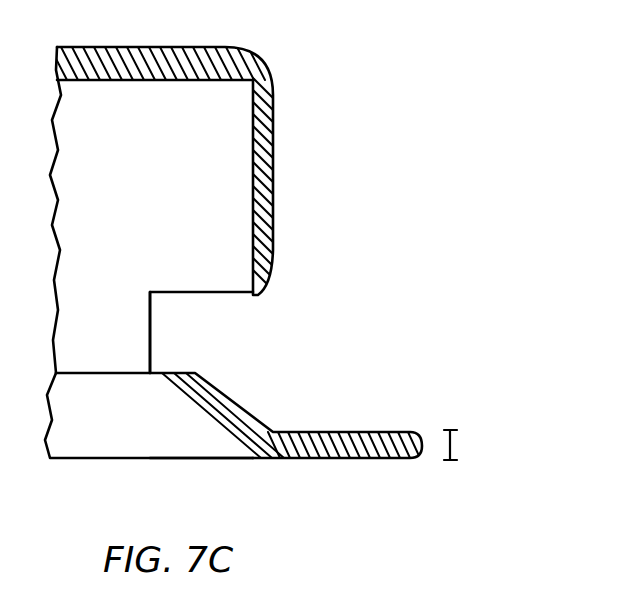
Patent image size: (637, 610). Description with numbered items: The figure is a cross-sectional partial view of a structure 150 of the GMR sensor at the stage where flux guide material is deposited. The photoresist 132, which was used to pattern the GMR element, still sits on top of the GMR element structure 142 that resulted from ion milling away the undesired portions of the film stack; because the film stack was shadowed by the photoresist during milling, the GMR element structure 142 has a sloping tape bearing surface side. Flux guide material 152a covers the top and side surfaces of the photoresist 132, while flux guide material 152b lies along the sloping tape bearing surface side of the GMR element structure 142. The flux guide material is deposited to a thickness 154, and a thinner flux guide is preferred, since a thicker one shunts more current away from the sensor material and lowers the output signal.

The structure 150 is at (420, 76).
The flux guide material 152a is at (275, 188).
The flux guide material 152b is at (310, 428).
The photoresist 132 is at (151, 332).
The GMR element structure 142 is at (228, 450).
The thickness 154 is at (458, 445).